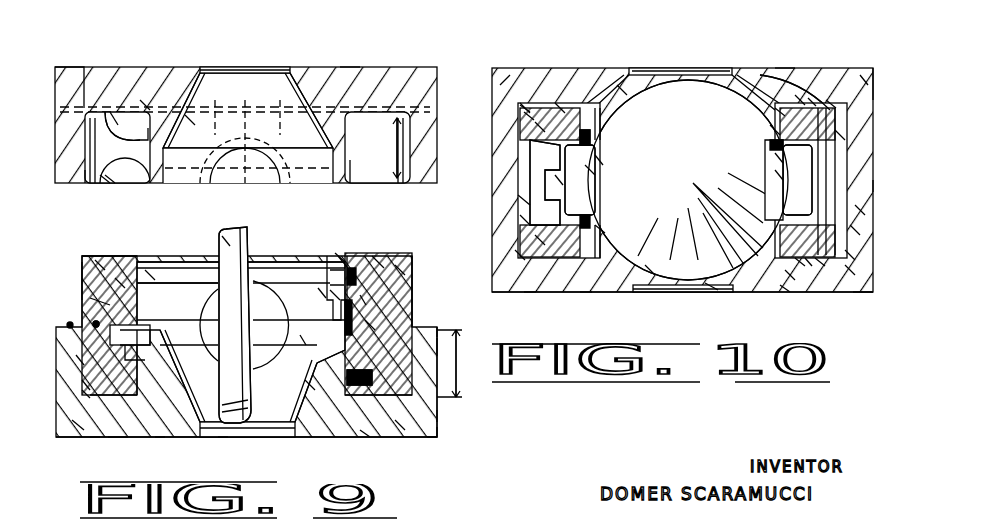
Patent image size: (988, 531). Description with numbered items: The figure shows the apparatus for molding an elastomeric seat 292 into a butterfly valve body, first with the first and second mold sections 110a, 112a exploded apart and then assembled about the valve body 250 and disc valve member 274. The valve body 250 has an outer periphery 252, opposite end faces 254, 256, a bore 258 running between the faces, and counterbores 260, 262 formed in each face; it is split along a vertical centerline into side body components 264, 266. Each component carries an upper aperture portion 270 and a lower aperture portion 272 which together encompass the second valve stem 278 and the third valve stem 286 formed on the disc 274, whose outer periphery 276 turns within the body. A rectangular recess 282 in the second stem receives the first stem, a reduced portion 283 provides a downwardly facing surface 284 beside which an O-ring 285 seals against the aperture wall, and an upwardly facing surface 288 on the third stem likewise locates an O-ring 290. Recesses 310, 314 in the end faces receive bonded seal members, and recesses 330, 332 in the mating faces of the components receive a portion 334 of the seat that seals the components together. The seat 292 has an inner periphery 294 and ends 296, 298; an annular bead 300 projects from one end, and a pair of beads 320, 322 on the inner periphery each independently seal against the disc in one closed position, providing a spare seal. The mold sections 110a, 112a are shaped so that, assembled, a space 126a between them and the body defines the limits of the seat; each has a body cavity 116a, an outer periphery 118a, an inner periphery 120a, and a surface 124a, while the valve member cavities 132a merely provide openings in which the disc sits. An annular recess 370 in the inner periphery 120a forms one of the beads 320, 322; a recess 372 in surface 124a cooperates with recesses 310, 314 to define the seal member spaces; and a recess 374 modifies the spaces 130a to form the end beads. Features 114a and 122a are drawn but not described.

In FIG. 9, the first mold section 110a is at (405, 440).
In FIG. 10, the first mold section 110a is at (620, 292).
In FIG. 9, the second mold section 112a is at (350, 75).
In FIG. 10, the second mold section 112a is at (785, 68).
In FIG. 9, the body side portion 114a is at (88, 178).
In FIG. 10, the body side portion 114a is at (873, 186).
In FIG. 9, the body cavity 116a is at (112, 182).
In FIG. 10, the body cavity 116a is at (860, 210).
In FIG. 10, the outer periphery 118a is at (835, 140).
In FIG. 9, the inner periphery 120a is at (118, 118).
In FIG. 10, the inner periphery 120a is at (785, 292).
In FIG. 9, the bore diameter 122a is at (396, 150).
In FIG. 9, the surface 124a is at (145, 105).
In FIG. 10, the surface 124a is at (800, 100).
In FIG. 9, the space 126a is at (160, 440).
In FIG. 10, the space 126a is at (775, 130).
In FIG. 9, the spaces 130a is at (122, 440).
In FIG. 10, the spaces 130a is at (800, 262).
In FIG. 9, the valve member cavity 132a is at (190, 120).
In FIG. 10, the valve member cavity 132a is at (622, 90).
In FIG. 9, the valve body 250 is at (95, 300).
In FIG. 10, the valve body 250 is at (540, 128).
In FIG. 9, the outer periphery 252 is at (90, 275).
In FIG. 10, the outer periphery 252 is at (848, 255).
In FIG. 9, the end face 254 is at (100, 265).
In FIG. 10, the end face 254 is at (527, 108).
In FIG. 9, the end face 256 is at (95, 438).
In FIG. 10, the end face 256 is at (530, 292).
In FIG. 9, the bore 258 is at (150, 275).
In FIG. 9, the counterbore 260 is at (120, 283).
In FIG. 10, the counterbore 260 is at (560, 108).
In FIG. 9, the counterbore 262 is at (113, 440).
In FIG. 10, the counterbore 262 is at (585, 292).
In FIG. 9, the side body component 264 is at (400, 270).
In FIG. 10, the side body component 264 is at (832, 102).
In FIG. 9, the side body component 266 is at (310, 385).
In FIG. 10, the side body component 266 is at (820, 262).
In FIG. 10, the upper aperture portion 270 is at (585, 140).
In FIG. 10, the lower aperture portion 272 is at (797, 180).
In FIG. 9, the disc valve member 274 is at (240, 258).
In FIG. 10, the disc valve member 274 is at (695, 85).
In FIG. 9, the outer periphery 276 is at (226, 240).
In FIG. 10, the outer periphery 276 is at (712, 287).
In FIG. 10, the second valve stem 278 is at (600, 190).
In FIG. 10, the recess 282 is at (545, 195).
In FIG. 10, the portion 283 is at (600, 160).
In FIG. 10, the downwardly facing surface 284 is at (590, 170).
In FIG. 10, the O-ring 285 is at (560, 180).
In FIG. 10, the third valve stem 286 is at (780, 158).
In FIG. 10, the upwardly facing surface 288 is at (780, 175).
In FIG. 10, the O-ring 290 is at (785, 73).
In FIG. 9, the elastomeric seat 292 is at (340, 258).
In FIG. 9, the inner periphery 294 is at (335, 295).
In FIG. 9, the end 296 is at (343, 262).
In FIG. 9, the end 298 is at (358, 396).
In FIG. 9, the annular bead 300 is at (378, 262).
In FIG. 9, the recess 310 is at (82, 262).
In FIG. 10, the recess 310 is at (528, 115).
In FIG. 9, the recess 314 is at (78, 425).
In FIG. 10, the recess 314 is at (520, 255).
In FIG. 9, the annular bead 320 is at (85, 395).
In FIG. 10, the annular bead 320 is at (850, 270).
In FIG. 9, the annular bead 322 is at (322, 293).
In FIG. 9, the recess 330 is at (80, 360).
In FIG. 9, the recess 332 is at (90, 326).
In FIG. 9, the portion 334 is at (370, 325).
In FIG. 9, the annular recess 370 is at (108, 178).
In FIG. 9, the recess 372 is at (84, 105).
In FIG. 10, the recess 372 is at (873, 90).
In FIG. 9, the recess 374 is at (114, 118).
In FIG. 10, the recess 374 is at (812, 100).